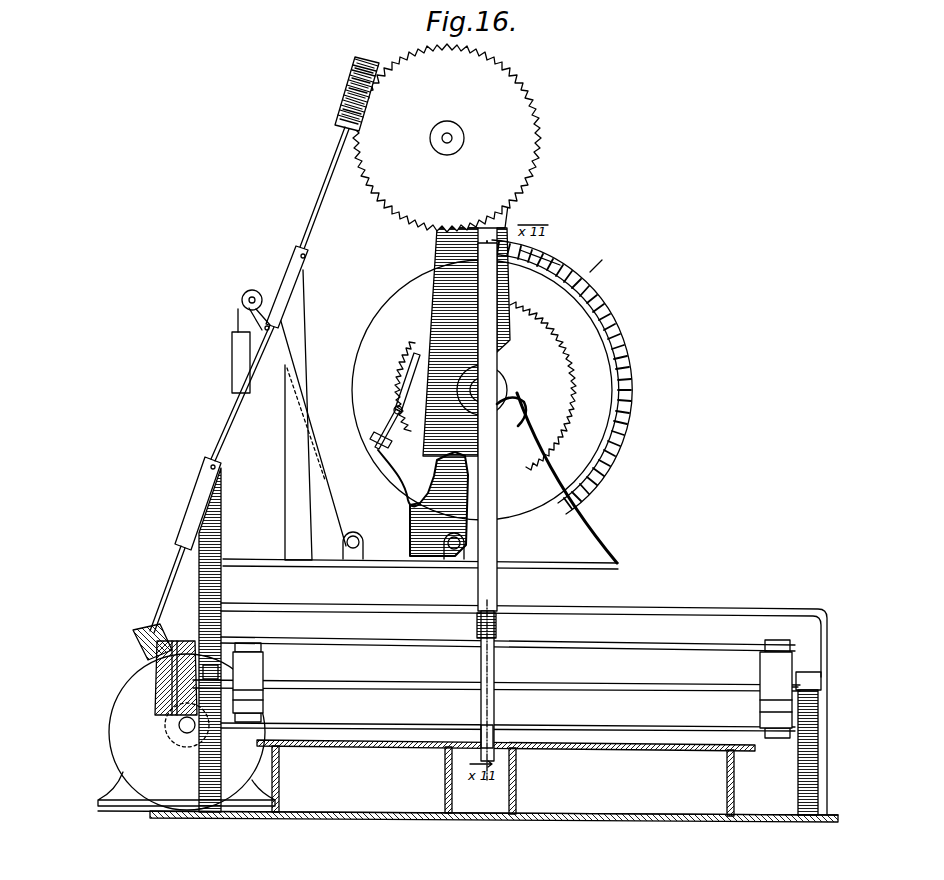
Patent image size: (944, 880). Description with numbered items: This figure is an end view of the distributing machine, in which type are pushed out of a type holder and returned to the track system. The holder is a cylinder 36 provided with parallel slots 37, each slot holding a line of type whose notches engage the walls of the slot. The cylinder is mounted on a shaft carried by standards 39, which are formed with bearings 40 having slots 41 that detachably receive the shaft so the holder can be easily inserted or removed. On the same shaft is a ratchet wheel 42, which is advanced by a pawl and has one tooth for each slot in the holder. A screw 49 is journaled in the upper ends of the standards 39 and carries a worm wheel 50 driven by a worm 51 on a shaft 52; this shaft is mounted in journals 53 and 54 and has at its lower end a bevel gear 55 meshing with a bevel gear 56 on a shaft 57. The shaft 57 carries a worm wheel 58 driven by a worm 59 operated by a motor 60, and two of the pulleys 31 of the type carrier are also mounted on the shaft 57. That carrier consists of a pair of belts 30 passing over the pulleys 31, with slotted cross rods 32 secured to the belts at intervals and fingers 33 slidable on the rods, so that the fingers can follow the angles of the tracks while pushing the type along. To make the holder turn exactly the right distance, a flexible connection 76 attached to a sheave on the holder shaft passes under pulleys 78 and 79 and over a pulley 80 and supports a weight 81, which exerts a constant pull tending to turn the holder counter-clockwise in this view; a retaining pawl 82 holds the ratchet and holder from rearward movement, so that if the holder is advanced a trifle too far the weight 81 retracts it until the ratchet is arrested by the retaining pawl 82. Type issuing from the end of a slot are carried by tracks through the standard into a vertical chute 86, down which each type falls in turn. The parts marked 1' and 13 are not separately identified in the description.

The frame 1' is at (468, 513).
The pawl 13 is at (397, 406).
The belts 30 is at (246, 642).
The pulleys 31 is at (265, 665).
The cross rods 32 is at (388, 724).
The finger 33 is at (500, 627).
The cylinder 36 is at (609, 299).
The parallel slots 37 is at (628, 345).
The standards 39 is at (540, 255).
The bearings 40 is at (468, 385).
The slots 41 is at (511, 388).
The ratchet wheel 42 is at (485, 386).
The screw 49 is at (455, 138).
The worm wheel 50 is at (537, 118).
The worm 51 is at (340, 122).
The shaft 52 is at (308, 208).
The journal 53 is at (285, 270).
The journal 54 is at (190, 510).
The bevel gear 55 is at (136, 640).
The bevel gear 56 is at (160, 668).
The shaft 57 is at (357, 680).
The worm wheel 58 is at (182, 643).
The worm 59 is at (180, 725).
The motor 60 is at (186, 732).
The flexible connection 76 is at (327, 470).
The pulley 78 is at (468, 545).
The pulley 79 is at (356, 537).
The pulley 80 is at (244, 296).
The weight 81 is at (232, 352).
The retaining pawl 82 is at (420, 440).
The vertical chute 86 is at (595, 280).